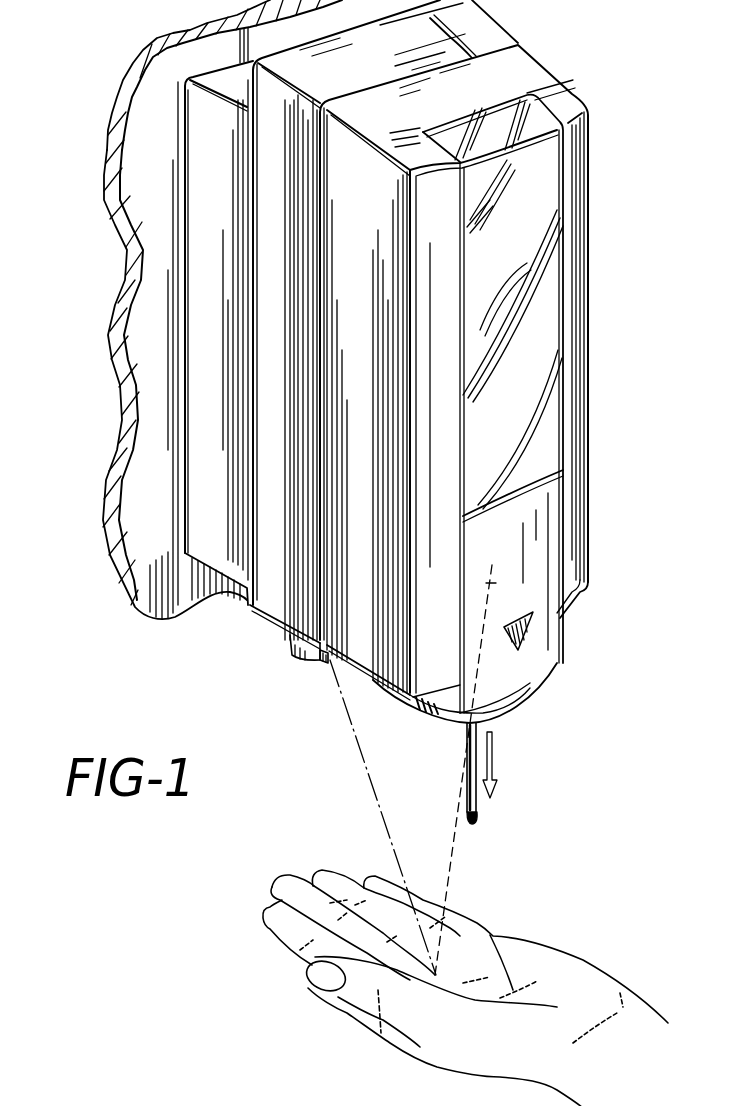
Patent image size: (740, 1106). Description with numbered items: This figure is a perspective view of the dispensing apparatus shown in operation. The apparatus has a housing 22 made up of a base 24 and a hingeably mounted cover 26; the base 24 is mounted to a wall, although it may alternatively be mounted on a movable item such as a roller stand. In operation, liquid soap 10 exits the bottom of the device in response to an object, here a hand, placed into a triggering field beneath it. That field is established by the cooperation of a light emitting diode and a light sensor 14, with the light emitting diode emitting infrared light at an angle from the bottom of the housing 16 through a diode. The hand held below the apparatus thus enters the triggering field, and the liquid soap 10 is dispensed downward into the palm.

The liquid soap 10 is at (481, 809).
The light sensor 14 is at (321, 664).
The housing 16 is at (300, 652).
The housing 22 is at (590, 268).
The base 24 is at (263, 594).
The cover 26 is at (585, 585).